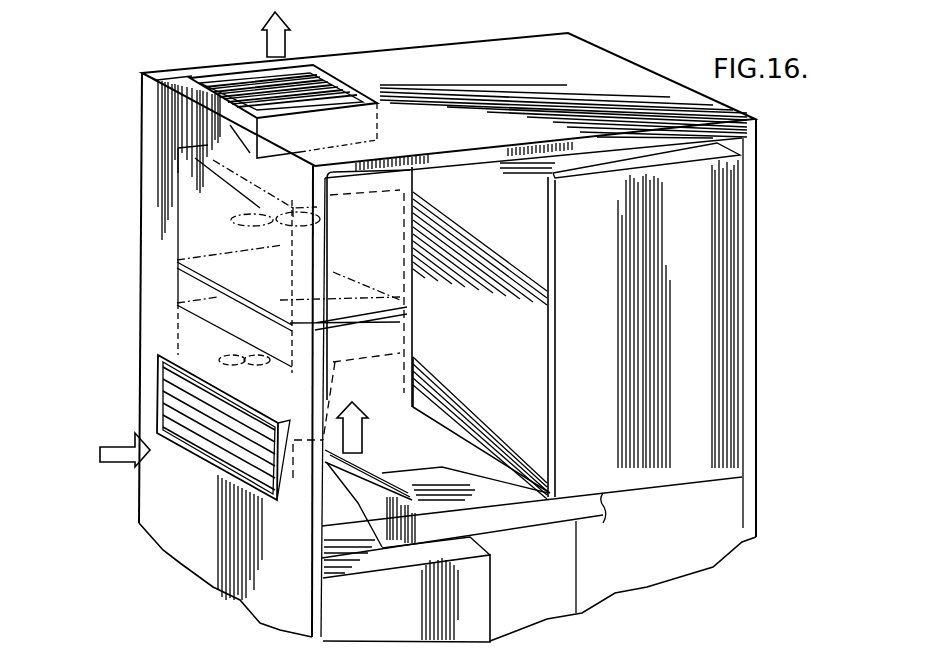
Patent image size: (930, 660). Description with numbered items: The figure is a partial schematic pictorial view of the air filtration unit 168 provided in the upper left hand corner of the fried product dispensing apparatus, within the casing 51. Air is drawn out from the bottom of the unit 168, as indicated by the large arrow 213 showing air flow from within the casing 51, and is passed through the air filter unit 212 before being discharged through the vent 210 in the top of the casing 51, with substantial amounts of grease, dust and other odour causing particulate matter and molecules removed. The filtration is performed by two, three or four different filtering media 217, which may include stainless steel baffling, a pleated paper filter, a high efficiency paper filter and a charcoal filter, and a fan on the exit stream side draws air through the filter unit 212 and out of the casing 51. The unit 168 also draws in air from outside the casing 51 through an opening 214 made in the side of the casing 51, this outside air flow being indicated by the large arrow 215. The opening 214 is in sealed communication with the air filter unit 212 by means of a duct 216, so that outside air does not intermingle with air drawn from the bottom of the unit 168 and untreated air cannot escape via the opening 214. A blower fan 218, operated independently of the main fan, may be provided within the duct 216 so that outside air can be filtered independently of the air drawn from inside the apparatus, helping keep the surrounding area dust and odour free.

The casing 51 is at (428, 68).
The vent 210 is at (340, 90).
The air filtration unit 168 is at (200, 235).
The air filter unit 212 is at (374, 259).
The filtering media 217 is at (383, 318).
The blower fan 218 is at (225, 355).
The opening 214 is at (220, 445).
The arrow indicating air flow from outside 215 is at (110, 463).
The duct 216 is at (293, 480).
The arrow indicating air flow from within casing 213 is at (363, 437).